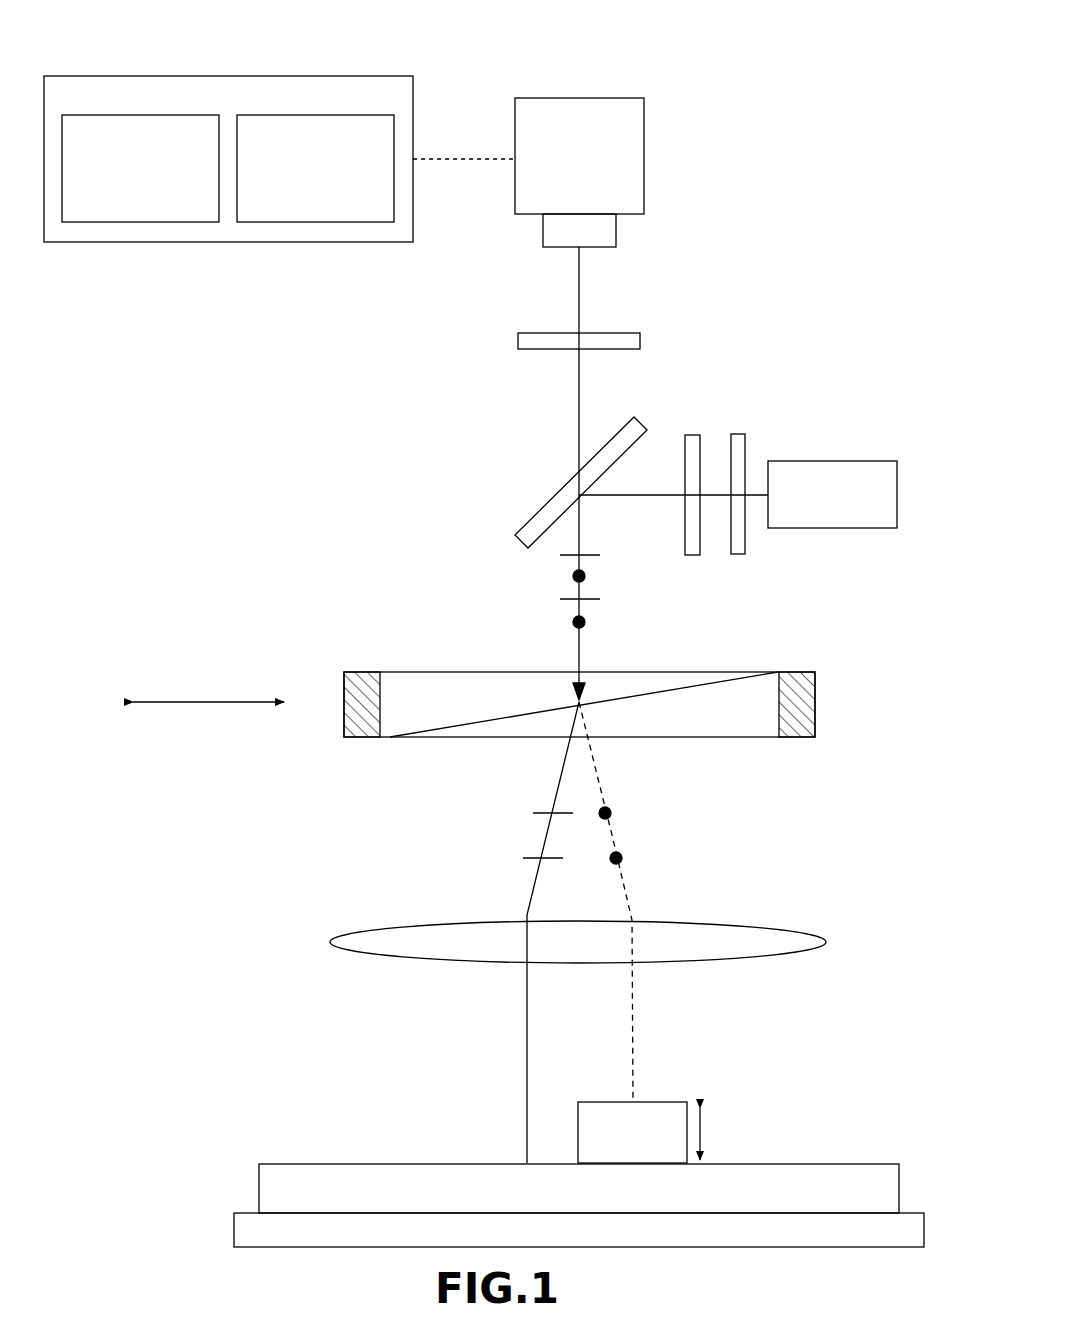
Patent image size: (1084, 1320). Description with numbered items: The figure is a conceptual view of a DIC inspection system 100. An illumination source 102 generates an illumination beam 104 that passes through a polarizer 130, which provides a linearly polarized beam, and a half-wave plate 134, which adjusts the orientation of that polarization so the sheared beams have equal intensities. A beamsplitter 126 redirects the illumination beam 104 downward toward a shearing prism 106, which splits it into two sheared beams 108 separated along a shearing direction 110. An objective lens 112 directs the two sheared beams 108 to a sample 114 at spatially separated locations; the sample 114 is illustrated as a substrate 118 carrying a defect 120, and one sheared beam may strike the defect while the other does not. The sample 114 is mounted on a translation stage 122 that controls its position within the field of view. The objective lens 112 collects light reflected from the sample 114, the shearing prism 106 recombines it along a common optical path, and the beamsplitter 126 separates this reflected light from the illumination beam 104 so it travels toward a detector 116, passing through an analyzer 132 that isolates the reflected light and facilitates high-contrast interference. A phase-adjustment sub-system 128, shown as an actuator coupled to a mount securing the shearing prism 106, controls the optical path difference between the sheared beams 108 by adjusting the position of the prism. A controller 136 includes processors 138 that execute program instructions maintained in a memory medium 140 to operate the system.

The DIC inspection system 100 is at (93, 25).
The illumination source 102 is at (849, 508).
The illumination beam 104 is at (755, 492).
The shearing prism 106 is at (685, 672).
The sheared beams 108 is at (563, 775).
The shearing direction 110 is at (208, 690).
The objective lens 112 is at (815, 935).
The sample 114 is at (883, 1128).
The detector 116 is at (597, 168).
The substrate 118 is at (259, 1190).
The defect 120 is at (663, 1102).
The translation stage 122 is at (234, 1228).
The beamsplitter 126 is at (579, 406).
The phase-adjustment sub-system 128 is at (813, 707).
The polarizer 130 is at (692, 435).
The analyzer 132 is at (610, 333).
The half-wave plate 134 is at (737, 554).
The controller 136 is at (80, 100).
The processors 138 is at (101, 138).
The memory medium 140 is at (277, 138).